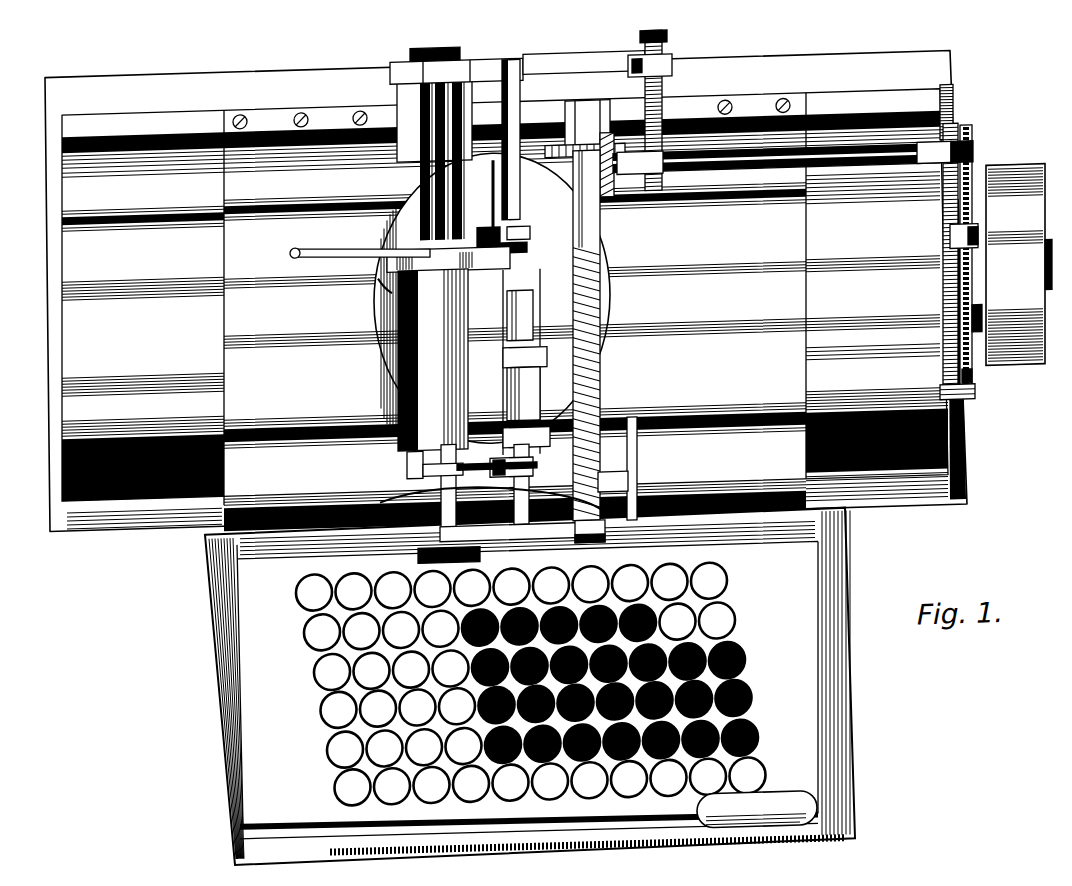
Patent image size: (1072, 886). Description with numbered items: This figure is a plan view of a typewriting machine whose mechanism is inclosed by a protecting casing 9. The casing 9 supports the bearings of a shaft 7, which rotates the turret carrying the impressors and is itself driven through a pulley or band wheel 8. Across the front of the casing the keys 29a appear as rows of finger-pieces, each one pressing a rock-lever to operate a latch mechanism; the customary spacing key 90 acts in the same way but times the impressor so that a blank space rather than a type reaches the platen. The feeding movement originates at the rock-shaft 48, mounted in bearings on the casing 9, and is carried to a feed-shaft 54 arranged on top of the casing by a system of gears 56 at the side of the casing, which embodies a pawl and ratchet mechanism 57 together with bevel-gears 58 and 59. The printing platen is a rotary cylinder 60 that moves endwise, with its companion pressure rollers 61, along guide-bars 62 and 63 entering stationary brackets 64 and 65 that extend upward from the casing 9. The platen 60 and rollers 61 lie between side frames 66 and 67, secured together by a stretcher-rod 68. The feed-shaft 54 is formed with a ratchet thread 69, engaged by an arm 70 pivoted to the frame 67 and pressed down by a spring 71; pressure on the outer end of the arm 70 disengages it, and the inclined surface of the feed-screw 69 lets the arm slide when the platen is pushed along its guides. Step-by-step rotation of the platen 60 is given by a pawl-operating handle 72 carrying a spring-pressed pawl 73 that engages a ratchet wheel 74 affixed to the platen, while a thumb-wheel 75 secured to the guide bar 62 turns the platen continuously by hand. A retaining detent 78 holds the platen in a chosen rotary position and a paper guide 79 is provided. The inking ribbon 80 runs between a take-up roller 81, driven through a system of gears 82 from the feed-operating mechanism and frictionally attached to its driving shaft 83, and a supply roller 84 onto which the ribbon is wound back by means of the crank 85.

The protecting casing 9 is at (328, 167).
The shaft 7 is at (1050, 276).
The pulley or band wheel 8 is at (985, 400).
The key 29a is at (737, 640).
The rock-shaft 48 is at (995, 307).
The feed-shaft 54 is at (759, 192).
The system of gears 56 is at (976, 243).
The pawl and ratchet mechanism 57 is at (970, 399).
The bevel-gear 58 is at (573, 181).
The bevel-gear 59 is at (588, 154).
The rotary cylinder platen 60 is at (398, 398).
The pressure rollers 61 is at (533, 322).
The guide-bar 62 is at (462, 186).
The guide-bar 63 is at (503, 220).
The stationary bracket 64 is at (520, 88).
The stationary bracket 65 is at (605, 559).
The side frame 66 is at (522, 246).
The side frame 67 is at (534, 481).
The stretcher-rod 68 is at (517, 266).
The ratchet thread (feed-screw) 69 is at (594, 429).
The arm 70 is at (608, 508).
The spring 71 is at (530, 489).
The pawl-operating handle 72 is at (318, 253).
The spring-pressed pawl 73 is at (418, 284).
The ratchet wheel 74 is at (383, 294).
The thumb-wheel 75 is at (481, 572).
The retaining detent 78 is at (518, 232).
The paper guide 79 is at (608, 291).
The inking ribbon 80 is at (462, 158).
The take-up roller 81 is at (460, 65).
The system of gears 82 is at (668, 118).
The driving shaft 83 is at (582, 75).
The supply roller 84 is at (420, 493).
The crank 85 is at (423, 500).
The spacing key 90 is at (788, 825).